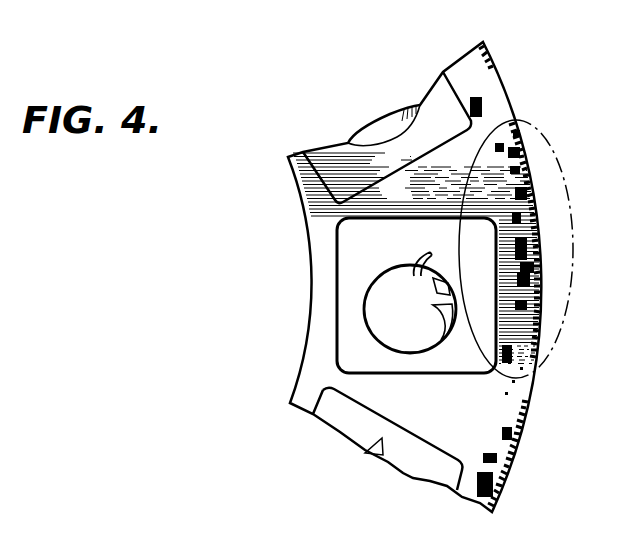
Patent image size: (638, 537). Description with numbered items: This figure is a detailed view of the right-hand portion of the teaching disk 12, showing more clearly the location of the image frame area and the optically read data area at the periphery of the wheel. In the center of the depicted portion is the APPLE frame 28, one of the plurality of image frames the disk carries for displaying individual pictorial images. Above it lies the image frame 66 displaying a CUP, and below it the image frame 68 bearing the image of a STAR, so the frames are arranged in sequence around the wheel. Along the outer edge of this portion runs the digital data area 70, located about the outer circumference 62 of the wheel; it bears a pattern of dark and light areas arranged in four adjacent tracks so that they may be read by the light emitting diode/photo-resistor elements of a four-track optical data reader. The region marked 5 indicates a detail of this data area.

The teaching disk 12 is at (511, 62).
The outer circumference 62 is at (516, 117).
The image frame displaying a CUP 66 is at (345, 179).
The APPLE frame 28 is at (352, 268).
The image frame bearing a STAR 68 is at (333, 400).
The digital data area 70 is at (505, 382).
The detail area shown in FIG. 5 is at (520, 249).